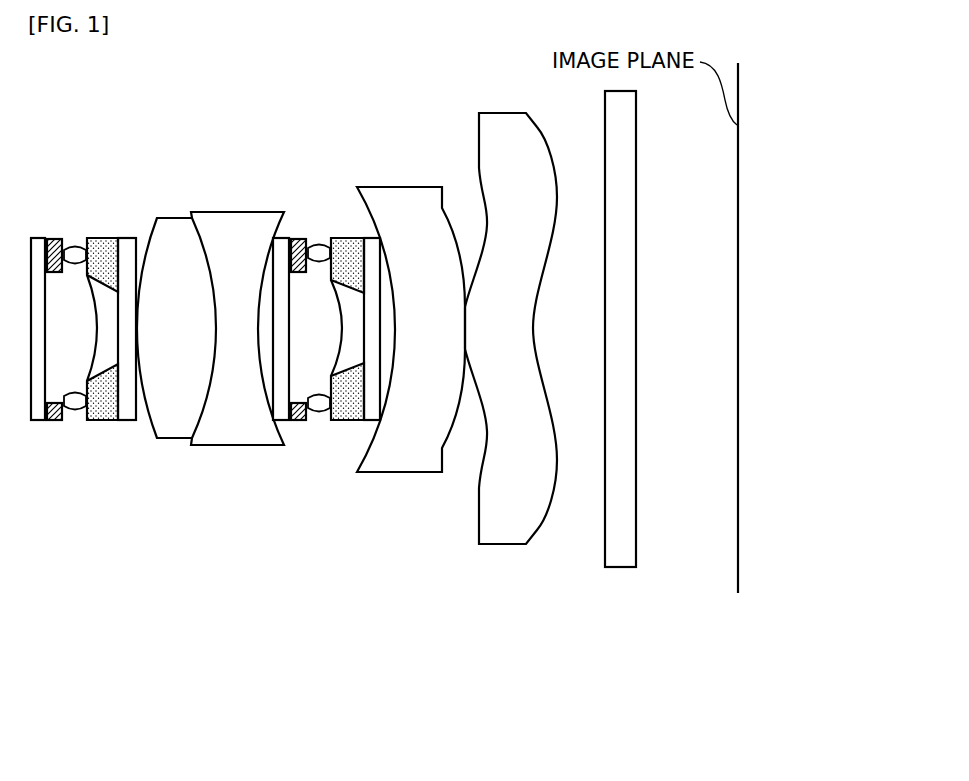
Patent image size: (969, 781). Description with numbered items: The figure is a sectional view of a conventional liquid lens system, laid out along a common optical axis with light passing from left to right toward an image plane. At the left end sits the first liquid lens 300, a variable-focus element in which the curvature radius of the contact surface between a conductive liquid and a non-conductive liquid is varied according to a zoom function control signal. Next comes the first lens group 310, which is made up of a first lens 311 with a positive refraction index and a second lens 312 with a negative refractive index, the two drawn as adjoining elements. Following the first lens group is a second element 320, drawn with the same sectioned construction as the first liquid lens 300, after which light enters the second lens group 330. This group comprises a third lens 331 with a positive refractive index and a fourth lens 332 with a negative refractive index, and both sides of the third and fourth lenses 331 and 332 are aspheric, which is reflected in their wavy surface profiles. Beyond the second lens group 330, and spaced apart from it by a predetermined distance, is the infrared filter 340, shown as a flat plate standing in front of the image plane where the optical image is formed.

The first liquid lens 300 is at (51, 443).
The first lens group 310 is at (193, 383).
The first lens 311 is at (163, 440).
The second lens 312 is at (242, 437).
The second liquid lens 320 is at (307, 445).
The second lens group 330 is at (457, 369).
The third lens 331 is at (402, 462).
The fourth lens 332 is at (503, 537).
The infrared filter 340 is at (615, 585).